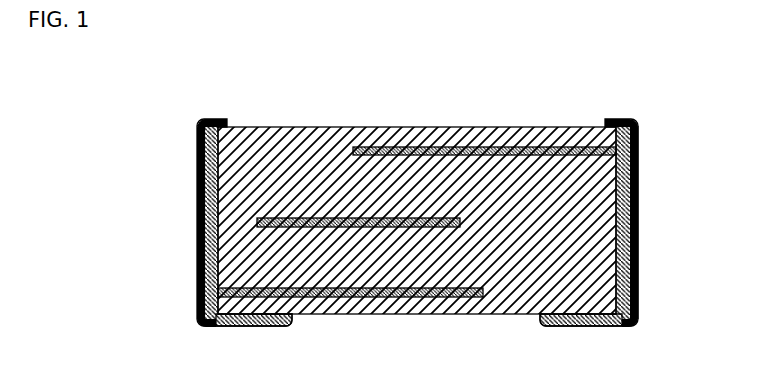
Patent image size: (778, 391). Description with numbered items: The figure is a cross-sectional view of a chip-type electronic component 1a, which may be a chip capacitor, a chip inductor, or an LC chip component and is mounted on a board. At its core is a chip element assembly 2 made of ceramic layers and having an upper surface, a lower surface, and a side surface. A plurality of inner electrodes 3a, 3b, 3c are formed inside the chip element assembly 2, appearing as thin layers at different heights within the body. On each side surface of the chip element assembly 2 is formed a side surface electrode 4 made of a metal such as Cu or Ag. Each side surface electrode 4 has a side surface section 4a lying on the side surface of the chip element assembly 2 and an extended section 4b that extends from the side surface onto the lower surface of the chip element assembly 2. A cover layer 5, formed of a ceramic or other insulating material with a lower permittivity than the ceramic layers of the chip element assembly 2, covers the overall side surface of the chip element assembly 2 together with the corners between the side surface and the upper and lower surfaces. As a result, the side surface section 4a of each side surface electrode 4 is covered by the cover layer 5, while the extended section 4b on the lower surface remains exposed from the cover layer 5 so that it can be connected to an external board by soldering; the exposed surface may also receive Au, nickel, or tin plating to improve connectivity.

The chip-type electronic component 1a is at (557, 102).
The chip element assembly 2 is at (497, 315).
The inner electrode 3a is at (420, 147).
The inner electrode 3b is at (290, 218).
The inner electrode 3c is at (345, 297).
The side surface electrode 4 is at (415, 247).
The side surface section 4a is at (201, 263).
The extended section 4b is at (236, 322).
The cover layer 5 is at (634, 210).